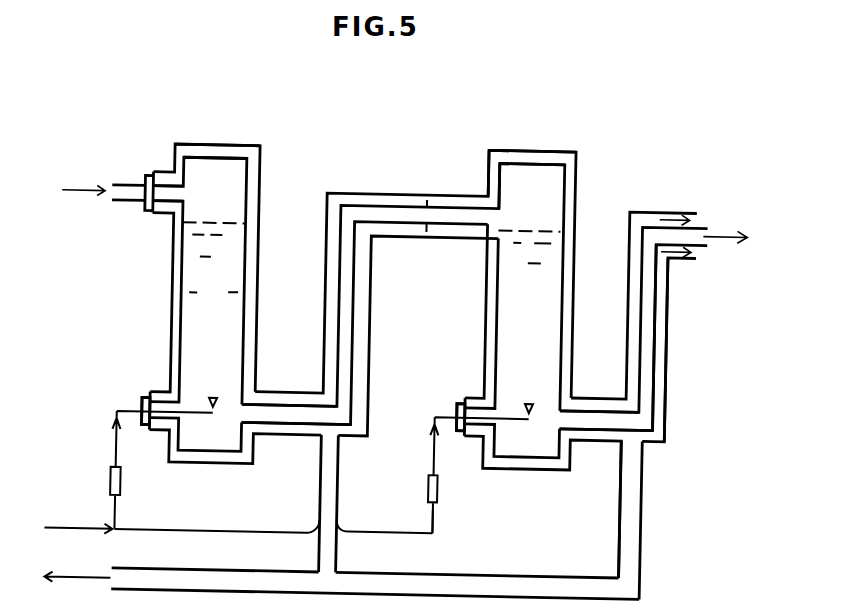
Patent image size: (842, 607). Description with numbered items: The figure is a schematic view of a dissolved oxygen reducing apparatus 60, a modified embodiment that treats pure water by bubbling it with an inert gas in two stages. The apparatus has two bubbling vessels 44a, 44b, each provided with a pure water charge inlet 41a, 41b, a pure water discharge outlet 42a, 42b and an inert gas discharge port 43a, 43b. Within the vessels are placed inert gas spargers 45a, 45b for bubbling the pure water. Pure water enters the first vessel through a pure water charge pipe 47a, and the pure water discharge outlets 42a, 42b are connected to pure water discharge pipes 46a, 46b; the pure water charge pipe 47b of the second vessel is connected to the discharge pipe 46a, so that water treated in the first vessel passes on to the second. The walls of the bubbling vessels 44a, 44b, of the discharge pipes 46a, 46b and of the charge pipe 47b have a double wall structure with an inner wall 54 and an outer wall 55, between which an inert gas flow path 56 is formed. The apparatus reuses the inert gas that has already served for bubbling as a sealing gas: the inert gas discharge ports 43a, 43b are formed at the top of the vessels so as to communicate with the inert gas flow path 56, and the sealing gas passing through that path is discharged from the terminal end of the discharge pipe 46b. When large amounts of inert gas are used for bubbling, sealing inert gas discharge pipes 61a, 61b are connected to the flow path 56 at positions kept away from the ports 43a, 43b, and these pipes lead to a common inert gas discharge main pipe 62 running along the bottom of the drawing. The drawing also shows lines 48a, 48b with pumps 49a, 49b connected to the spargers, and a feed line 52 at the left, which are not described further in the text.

The pure water charge inlet 41a is at (163, 193).
The pure water charge inlet 41b is at (485, 212).
The pure water discharge outlet 42a is at (252, 418).
The pure water discharge outlet 42b is at (567, 420).
The inert gas discharge port 43a is at (210, 162).
The inert gas discharge port 43b is at (524, 161).
The bubbling vessel 44a is at (152, 306).
The bubbling vessel 44b is at (469, 320).
The inert gas sparger 45a is at (212, 399).
The inert gas sparger 45b is at (529, 398).
The pure water discharge pipe 46a is at (294, 450).
The pure water discharge pipe 46b is at (679, 367).
The pure water charge pipe 47a is at (126, 208).
The pure water charge pipe 47b is at (430, 257).
The supply pipe 48a is at (119, 519).
The supply pipe 48b is at (437, 521).
The pump 49a is at (114, 486).
The pump 49b is at (441, 490).
The feed line 52 is at (89, 534).
The inner wall 54 is at (244, 264).
The outer wall 55 is at (328, 194).
The inert gas flow path 56 is at (250, 221).
The dissolved oxygen reducing apparatus 60 is at (395, 139).
The sealing inert gas discharge pipe 61a is at (344, 507).
The sealing inert gas discharge pipe 61b is at (647, 522).
The inert gas discharge main pipe 62 is at (185, 573).